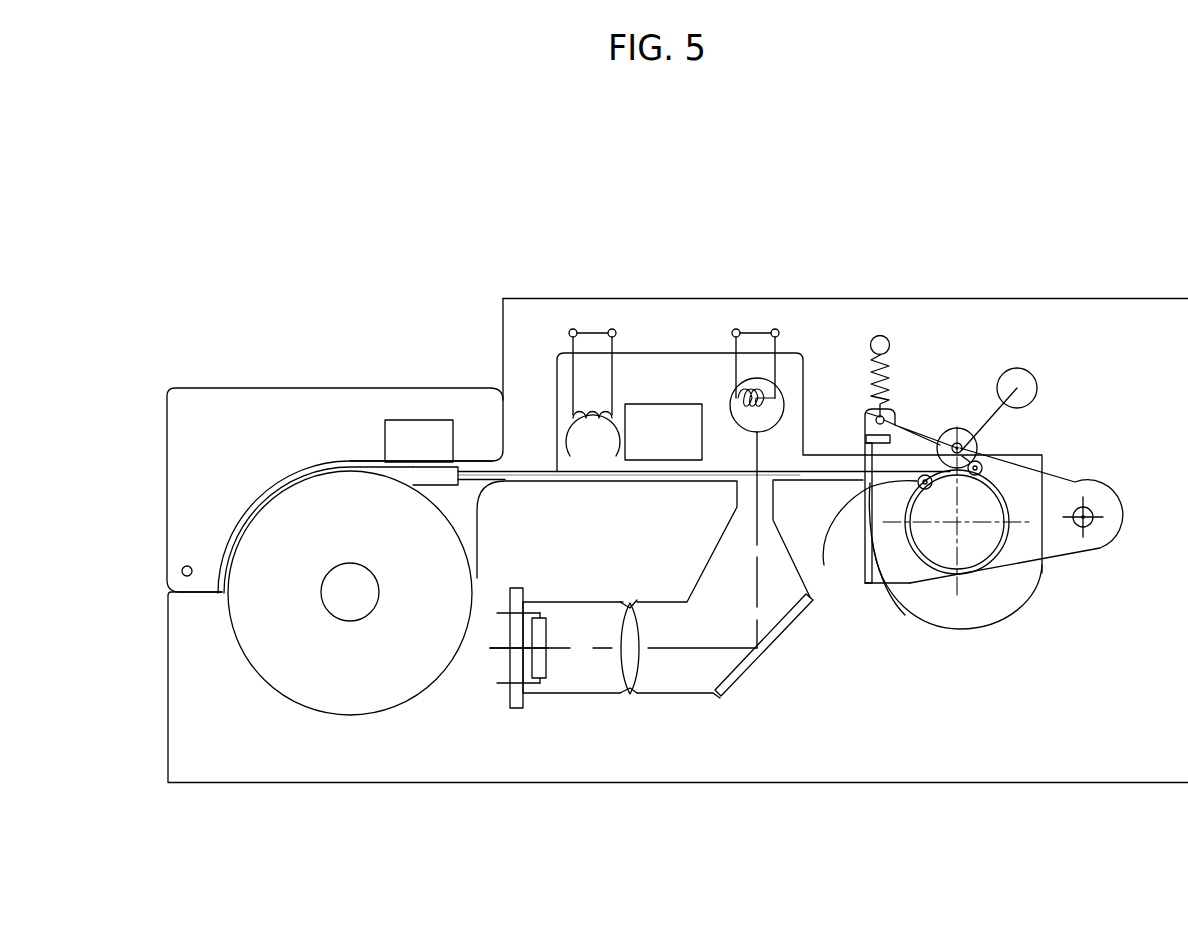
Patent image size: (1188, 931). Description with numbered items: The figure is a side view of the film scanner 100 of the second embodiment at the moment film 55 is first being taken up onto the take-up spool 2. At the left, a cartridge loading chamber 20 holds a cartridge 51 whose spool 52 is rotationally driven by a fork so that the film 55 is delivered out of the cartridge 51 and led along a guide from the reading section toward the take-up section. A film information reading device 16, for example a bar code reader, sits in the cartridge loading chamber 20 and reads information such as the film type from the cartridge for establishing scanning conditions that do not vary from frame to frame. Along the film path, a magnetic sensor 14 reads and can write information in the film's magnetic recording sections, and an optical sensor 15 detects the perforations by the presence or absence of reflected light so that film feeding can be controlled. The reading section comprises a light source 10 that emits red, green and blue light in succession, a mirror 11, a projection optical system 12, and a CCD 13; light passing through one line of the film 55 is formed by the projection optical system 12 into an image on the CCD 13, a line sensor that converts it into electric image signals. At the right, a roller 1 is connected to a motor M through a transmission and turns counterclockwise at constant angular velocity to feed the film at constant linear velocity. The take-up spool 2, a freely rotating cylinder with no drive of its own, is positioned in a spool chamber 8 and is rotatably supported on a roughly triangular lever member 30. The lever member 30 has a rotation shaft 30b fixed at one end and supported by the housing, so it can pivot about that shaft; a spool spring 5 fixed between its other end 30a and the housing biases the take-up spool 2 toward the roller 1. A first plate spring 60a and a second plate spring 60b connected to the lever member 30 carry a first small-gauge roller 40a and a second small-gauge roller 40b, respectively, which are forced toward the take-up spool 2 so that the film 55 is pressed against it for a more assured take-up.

The film scanner 100 is at (672, 784).
The cartridge 51 is at (320, 510).
The spool 52 is at (350, 600).
The film information reading device 16 is at (422, 437).
The cartridge loading chamber 20 is at (462, 510).
The film 55 is at (527, 475).
The magnetic sensor 14 is at (593, 343).
The optical sensor 15 is at (667, 423).
The light source 10 is at (753, 343).
The CCD 13 is at (543, 660).
The projection optical system 12 is at (628, 692).
The mirror 11 is at (730, 682).
The take-up spool 2 is at (973, 552).
The roller 1 is at (957, 448).
The first plate spring 60a is at (910, 448).
The second plate spring 60b is at (880, 550).
The spool chamber 8 is at (927, 623).
The motor M is at (1017, 385).
The spool spring 5 is at (870, 362).
The other end of lever member 30a is at (877, 420).
The lever member 30 is at (1068, 543).
The first small-gauge roller 40a is at (980, 453).
The rotation shaft 30b is at (1090, 523).
The second small-gauge roller 40b is at (824, 565).